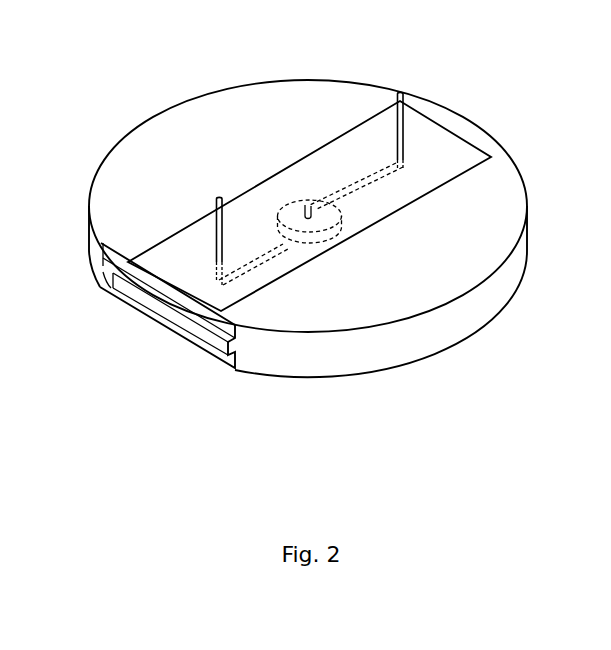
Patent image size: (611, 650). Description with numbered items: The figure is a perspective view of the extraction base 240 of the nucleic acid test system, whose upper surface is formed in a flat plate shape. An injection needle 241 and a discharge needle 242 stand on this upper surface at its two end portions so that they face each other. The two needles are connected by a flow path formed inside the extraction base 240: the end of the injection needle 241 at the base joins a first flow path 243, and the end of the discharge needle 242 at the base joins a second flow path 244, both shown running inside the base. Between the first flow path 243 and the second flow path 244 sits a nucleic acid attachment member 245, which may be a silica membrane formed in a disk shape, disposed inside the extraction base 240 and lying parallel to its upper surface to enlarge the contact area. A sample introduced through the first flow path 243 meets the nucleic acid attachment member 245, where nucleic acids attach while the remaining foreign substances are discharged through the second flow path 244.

The extraction base 240 is at (466, 267).
The injection needle 241 is at (407, 125).
The discharge needle 242 is at (214, 228).
The first flow path 243 is at (358, 178).
The second flow path 244 is at (242, 278).
The nucleic acid attachment member 245 is at (328, 236).